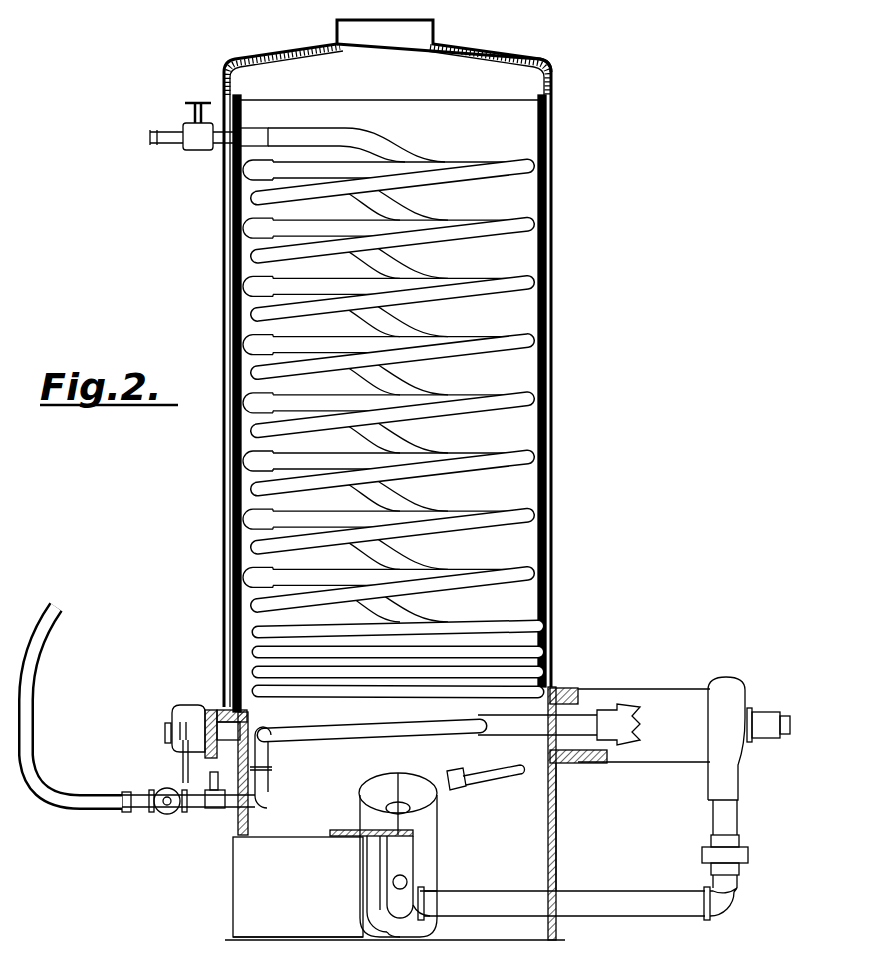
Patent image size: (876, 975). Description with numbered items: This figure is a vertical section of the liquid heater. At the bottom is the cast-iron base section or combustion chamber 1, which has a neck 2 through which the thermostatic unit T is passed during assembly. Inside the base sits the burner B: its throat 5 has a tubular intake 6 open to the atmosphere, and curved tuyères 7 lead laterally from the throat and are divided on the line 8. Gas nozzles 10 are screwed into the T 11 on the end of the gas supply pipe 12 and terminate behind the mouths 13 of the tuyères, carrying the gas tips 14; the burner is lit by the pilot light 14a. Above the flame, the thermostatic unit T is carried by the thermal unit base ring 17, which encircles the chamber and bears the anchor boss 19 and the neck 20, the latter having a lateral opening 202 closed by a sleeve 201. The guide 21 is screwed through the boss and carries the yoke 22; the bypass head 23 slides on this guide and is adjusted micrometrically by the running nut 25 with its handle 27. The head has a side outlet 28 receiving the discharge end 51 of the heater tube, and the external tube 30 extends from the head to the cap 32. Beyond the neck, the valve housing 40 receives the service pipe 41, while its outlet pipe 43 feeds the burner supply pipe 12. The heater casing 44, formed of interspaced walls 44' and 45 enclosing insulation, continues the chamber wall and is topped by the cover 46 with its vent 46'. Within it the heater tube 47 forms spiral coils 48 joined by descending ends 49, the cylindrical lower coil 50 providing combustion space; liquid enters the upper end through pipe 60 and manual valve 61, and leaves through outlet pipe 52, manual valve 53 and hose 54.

The base section or combustion chamber 1 is at (558, 840).
The neck 2 is at (584, 764).
The throat 5 is at (362, 940).
The tubular intake 6 is at (298, 890).
The tuyères 7 is at (432, 828).
The dividing line 8 is at (405, 938).
The gas nozzles 10 is at (402, 873).
The T 11 is at (436, 918).
The gas supply pipe 12 is at (634, 908).
The mouths of the tuyères 13 is at (410, 790).
The gas tips 14 is at (386, 800).
The pilot light 14a is at (458, 771).
The thermal unit base ring 17 is at (210, 708).
The anchor boss 19 is at (225, 785).
The neck 20 is at (590, 690).
The sleeve 201 is at (666, 680).
The lateral opening 202 is at (620, 764).
The guide 21 is at (226, 710).
The yoke 22 is at (182, 705).
The bypass head 23 is at (275, 755).
The running nut 25 is at (165, 735).
The handle 27 is at (183, 770).
The side outlet 28 is at (262, 730).
The external tube 30 is at (537, 725).
The cap 32 is at (633, 722).
The valve housing 40 is at (724, 684).
The service pipe 41 is at (780, 706).
The outlet pipe 43 is at (738, 818).
The casing 44 is at (410, 363).
The casing wall 44' is at (419, 379).
The casing wall 45 is at (548, 428).
The cover 46 is at (459, 64).
The vent 46' is at (358, 31).
The heater tube 47 is at (466, 178).
The spiral coils 48 is at (465, 290).
The descending ends 49 is at (410, 444).
The lower coil 50 is at (488, 642).
The discharge end 51 is at (392, 730).
The outlet pipe 52 is at (273, 795).
The manual valve 53 is at (167, 814).
The hose 54 is at (96, 812).
The pipe 60 is at (156, 147).
The manual valve 61 is at (202, 150).
The burner B is at (346, 826).
The thermostatic unit T is at (486, 764).